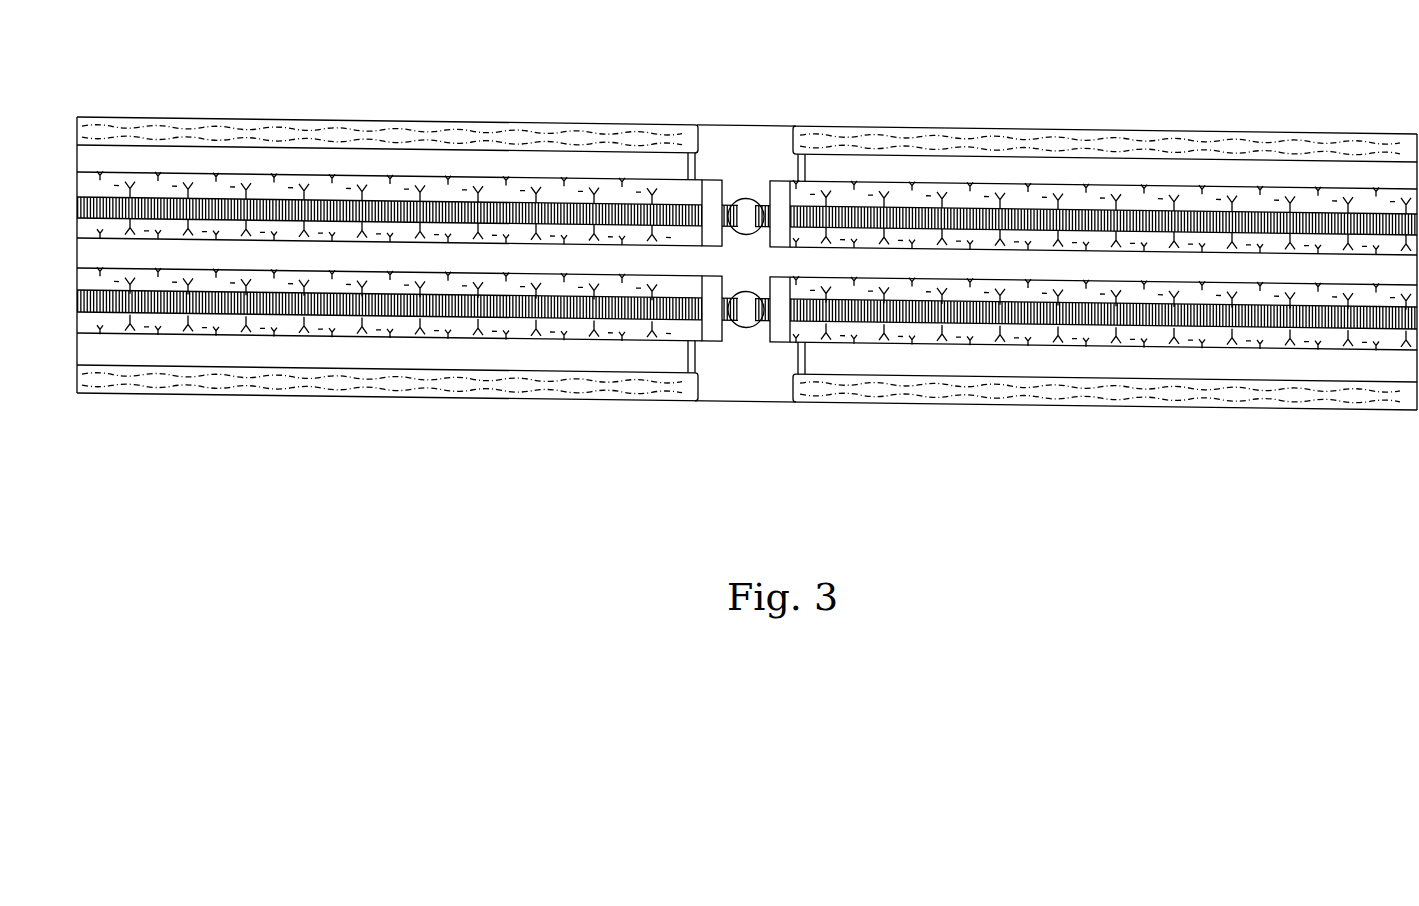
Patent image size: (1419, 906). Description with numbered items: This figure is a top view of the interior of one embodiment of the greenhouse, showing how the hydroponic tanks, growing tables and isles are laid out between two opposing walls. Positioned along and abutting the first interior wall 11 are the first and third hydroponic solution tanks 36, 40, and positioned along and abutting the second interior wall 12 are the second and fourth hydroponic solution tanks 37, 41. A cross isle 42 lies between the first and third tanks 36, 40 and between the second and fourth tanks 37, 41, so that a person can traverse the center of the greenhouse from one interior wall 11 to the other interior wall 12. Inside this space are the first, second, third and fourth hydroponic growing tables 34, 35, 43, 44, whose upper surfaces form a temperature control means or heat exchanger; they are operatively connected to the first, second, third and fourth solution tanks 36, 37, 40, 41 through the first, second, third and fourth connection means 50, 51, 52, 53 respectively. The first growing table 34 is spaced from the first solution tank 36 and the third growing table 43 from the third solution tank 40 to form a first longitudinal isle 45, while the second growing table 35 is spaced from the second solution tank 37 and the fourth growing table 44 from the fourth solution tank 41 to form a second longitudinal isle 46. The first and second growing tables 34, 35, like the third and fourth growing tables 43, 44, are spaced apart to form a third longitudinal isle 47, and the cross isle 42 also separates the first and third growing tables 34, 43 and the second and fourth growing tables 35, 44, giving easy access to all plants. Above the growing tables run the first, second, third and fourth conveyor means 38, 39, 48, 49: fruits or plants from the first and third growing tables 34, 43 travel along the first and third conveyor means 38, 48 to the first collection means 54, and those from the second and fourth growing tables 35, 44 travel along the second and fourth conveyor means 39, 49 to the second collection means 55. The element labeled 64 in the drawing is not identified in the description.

The first interior wall 11 is at (1057, 407).
The second interior wall 12 is at (1108, 130).
The first hydroponic growing table 34 is at (897, 345).
The second hydroponic growing table 35 is at (921, 185).
The first hydroponic solution tank 36 is at (977, 392).
The second hydroponic solution tank 37 is at (1236, 146).
The first conveyor means 38 is at (1127, 322).
The second conveyor means 39 is at (1015, 210).
The third hydroponic solution tank 40 is at (307, 380).
The fourth hydroponic solution tank 41 is at (271, 131).
The cross isle 42 is at (730, 153).
The third hydroponic growing table 43 is at (421, 338).
The fourth hydroponic growing table 44 is at (358, 178).
The first longitudinal isle 45 is at (1249, 368).
The second longitudinal isle 46 is at (1322, 178).
The third longitudinal isle 47 is at (1305, 270).
The third conveyor means 48 is at (186, 313).
The fourth conveyor means 49 is at (182, 200).
The first connection means 50 is at (805, 365).
The second connection means 51 is at (807, 168).
The third connection means 52 is at (685, 358).
The fourth connection means 53 is at (688, 168).
The first collection means 54 is at (742, 326).
The second collection means 55 is at (748, 197).
The clamp block 64 is at (776, 345).